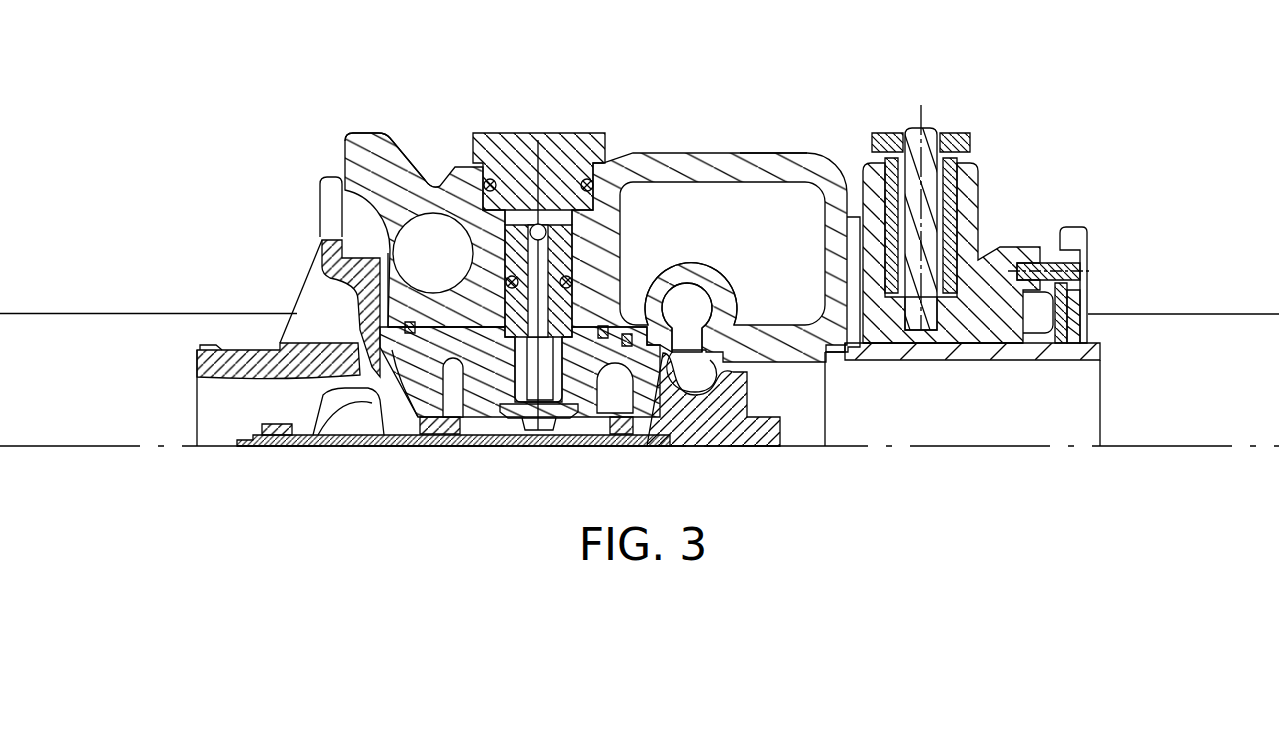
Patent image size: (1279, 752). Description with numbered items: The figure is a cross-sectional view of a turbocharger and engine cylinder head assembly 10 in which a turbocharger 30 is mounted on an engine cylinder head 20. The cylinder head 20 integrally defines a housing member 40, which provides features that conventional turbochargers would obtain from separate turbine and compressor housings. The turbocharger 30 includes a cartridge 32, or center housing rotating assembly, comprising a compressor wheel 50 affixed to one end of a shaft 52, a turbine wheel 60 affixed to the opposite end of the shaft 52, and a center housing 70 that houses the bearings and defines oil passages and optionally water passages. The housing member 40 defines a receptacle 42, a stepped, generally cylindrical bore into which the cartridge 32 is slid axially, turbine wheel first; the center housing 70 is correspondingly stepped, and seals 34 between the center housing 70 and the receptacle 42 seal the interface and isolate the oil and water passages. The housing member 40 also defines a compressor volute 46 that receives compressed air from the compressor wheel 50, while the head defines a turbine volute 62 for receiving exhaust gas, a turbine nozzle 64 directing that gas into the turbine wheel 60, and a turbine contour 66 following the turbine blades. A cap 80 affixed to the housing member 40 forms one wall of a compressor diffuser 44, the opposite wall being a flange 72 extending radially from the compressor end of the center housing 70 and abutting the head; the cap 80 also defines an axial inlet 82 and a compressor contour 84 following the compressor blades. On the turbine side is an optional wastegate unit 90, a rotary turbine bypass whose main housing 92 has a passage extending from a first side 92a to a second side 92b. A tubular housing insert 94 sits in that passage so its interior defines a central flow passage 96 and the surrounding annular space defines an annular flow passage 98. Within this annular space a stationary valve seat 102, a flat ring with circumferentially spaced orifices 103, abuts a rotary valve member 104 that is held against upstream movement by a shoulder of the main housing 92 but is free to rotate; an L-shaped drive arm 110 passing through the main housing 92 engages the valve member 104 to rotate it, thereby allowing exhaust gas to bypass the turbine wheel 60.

The turbocharger and engine cylinder head assembly 10 is at (953, 102).
The engine cylinder head 20 is at (1260, 330).
The turbocharger 30 is at (617, 132).
The cartridge 32 is at (484, 458).
The seals 34 is at (408, 325).
The housing member 40 is at (706, 158).
The receptacle 42 is at (467, 328).
The compressor diffuser 44 is at (395, 300).
The compressor volute 46 is at (438, 232).
The compressor wheel 50 is at (347, 398).
The shaft 52 is at (393, 437).
The turbine wheel 60 is at (700, 423).
The turbine volute 62 is at (690, 302).
The turbine nozzle 64 is at (690, 348).
The turbine contour 66 is at (708, 365).
The center housing 70 is at (483, 373).
The flange 72 is at (397, 213).
The cap 80 is at (273, 363).
The axial inlet 82 is at (231, 390).
The compressor contour 84 is at (375, 380).
The wastegate unit 90 is at (1124, 249).
The main housing 92 is at (988, 265).
The first side 92a is at (853, 290).
The second side 92b is at (1088, 238).
The housing insert 94 is at (1023, 357).
The central flow passage 96 is at (1080, 373).
The annular flow passage 98 is at (980, 338).
The valve seat 102 is at (1085, 268).
The orifices 103 is at (1080, 313).
The rotary valve member 104 is at (1062, 300).
The drive arm 110 is at (960, 320).